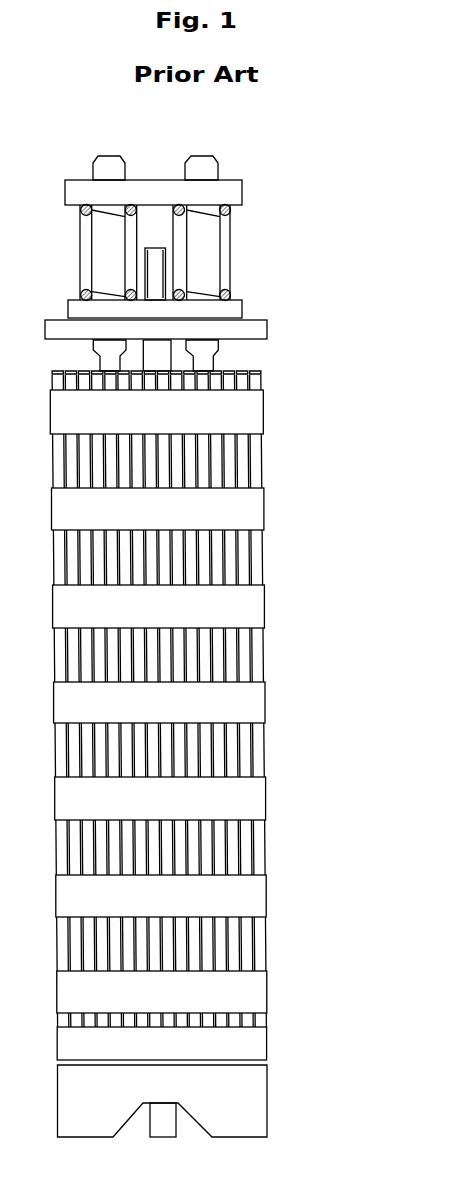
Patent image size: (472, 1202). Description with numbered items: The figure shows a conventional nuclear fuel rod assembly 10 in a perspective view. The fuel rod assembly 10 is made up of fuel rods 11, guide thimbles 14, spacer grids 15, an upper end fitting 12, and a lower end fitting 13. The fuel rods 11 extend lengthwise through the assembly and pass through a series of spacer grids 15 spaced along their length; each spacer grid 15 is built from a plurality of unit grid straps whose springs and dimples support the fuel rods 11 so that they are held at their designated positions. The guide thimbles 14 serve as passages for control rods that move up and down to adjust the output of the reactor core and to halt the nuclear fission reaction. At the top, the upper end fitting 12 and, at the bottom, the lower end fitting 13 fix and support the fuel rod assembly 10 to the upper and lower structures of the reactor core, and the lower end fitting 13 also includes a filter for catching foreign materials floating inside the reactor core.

The fuel rod assembly 10 is at (259, 182).
The fuel rods 11 is at (255, 548).
The upper end fitting 12 is at (257, 329).
The lower end fitting 13 is at (257, 1098).
The guide thimbles 14 is at (215, 367).
The spacer grids 15 is at (253, 702).